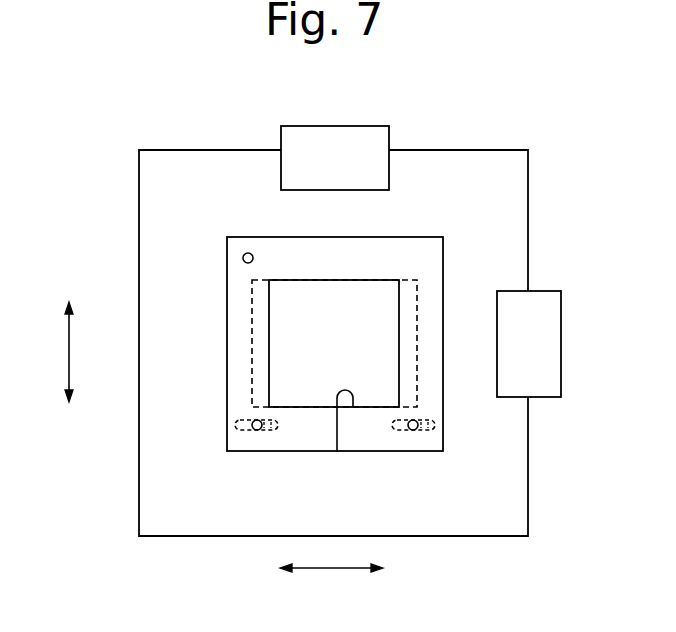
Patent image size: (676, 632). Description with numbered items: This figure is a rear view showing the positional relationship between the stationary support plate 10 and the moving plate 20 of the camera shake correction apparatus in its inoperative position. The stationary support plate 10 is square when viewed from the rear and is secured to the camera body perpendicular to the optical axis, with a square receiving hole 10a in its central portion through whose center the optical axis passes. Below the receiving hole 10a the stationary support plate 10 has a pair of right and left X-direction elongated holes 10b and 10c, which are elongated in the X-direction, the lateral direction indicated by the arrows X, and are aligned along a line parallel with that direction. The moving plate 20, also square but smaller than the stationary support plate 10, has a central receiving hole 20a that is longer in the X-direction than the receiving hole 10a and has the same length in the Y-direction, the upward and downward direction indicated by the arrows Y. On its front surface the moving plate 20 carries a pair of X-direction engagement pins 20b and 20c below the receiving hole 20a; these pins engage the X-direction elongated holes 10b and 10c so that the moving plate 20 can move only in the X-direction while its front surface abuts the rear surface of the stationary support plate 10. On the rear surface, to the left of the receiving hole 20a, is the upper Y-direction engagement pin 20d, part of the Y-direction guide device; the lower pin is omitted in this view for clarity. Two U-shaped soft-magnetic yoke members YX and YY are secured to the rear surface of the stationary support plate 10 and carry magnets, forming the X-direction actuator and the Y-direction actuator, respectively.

The stationary support plate 10 is at (515, 472).
The receiving hole 10a is at (418, 315).
The X-direction elongated hole 10b is at (266, 431).
The X-direction elongated hole 10c is at (428, 431).
The moving plate 20 is at (237, 350).
The receiving hole 20a is at (337, 452).
The X-direction engagement pin 20b is at (254, 431).
The X-direction engagement pin 20c is at (412, 431).
The Y-direction engagement pin 20d is at (243, 258).
The yoke member YY is at (373, 171).
The yoke member YX is at (545, 345).
The X-direction arrow X is at (328, 569).
The Y-direction arrow Y is at (67, 355).